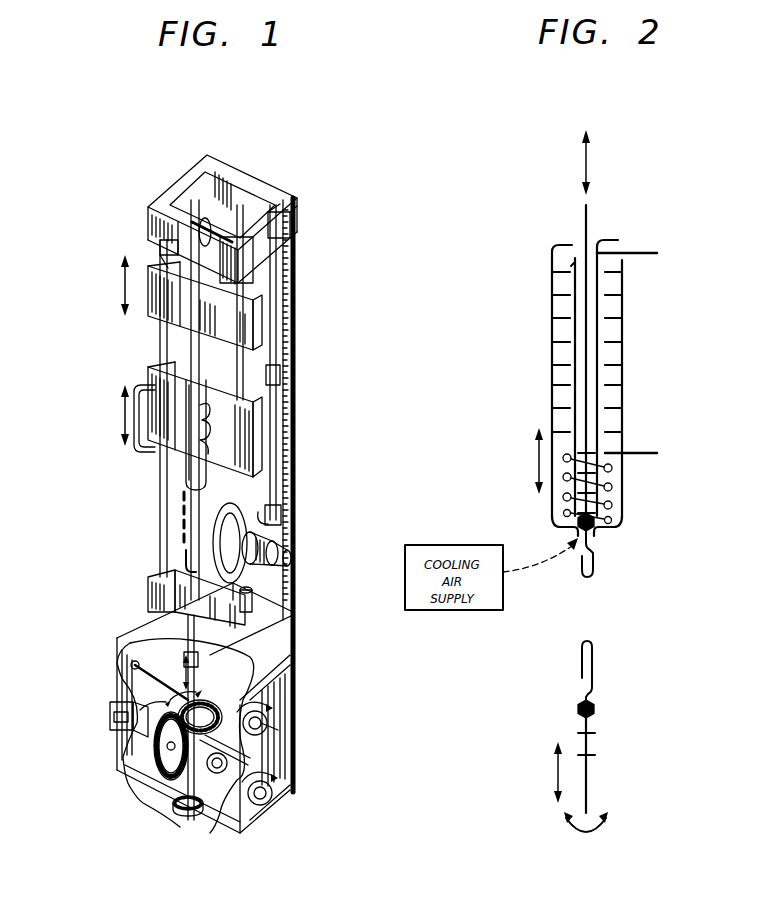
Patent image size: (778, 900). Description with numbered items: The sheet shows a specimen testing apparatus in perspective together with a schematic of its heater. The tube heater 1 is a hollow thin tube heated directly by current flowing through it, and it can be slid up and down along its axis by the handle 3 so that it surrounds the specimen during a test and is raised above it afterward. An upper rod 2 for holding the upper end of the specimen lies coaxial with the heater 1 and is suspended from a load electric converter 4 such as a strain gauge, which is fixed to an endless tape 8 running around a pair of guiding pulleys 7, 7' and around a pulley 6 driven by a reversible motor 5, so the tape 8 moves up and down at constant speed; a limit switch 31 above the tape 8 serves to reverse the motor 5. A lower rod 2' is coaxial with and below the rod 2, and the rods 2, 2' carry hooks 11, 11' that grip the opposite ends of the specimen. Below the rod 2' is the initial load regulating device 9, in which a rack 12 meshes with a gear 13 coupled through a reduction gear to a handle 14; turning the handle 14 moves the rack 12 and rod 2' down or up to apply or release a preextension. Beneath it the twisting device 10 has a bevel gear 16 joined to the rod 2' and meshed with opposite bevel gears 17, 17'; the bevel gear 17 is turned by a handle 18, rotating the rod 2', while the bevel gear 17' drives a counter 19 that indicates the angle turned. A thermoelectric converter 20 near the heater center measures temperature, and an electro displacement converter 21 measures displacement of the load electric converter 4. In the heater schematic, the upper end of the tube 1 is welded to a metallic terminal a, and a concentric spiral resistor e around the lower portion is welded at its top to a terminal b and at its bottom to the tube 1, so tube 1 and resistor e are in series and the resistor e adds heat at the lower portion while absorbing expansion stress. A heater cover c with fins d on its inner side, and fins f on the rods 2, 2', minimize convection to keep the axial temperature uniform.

In FIG. 1, the tube heater 1 is at (190, 452).
In FIG. 2, the tube heater 1 is at (598, 352).
In FIG. 1, the upper rod 2 is at (130, 400).
In FIG. 2, the upper rod 2 is at (614, 333).
In FIG. 1, the lower rod 2' is at (165, 599).
In FIG. 2, the lower rod 2' is at (614, 765).
In FIG. 1, the handle 3 is at (148, 437).
In FIG. 1, the load electric converter 4 is at (186, 306).
In FIG. 1, the reversible motor 5 is at (287, 553).
In FIG. 1, the pulley 6 is at (268, 515).
In FIG. 1, the guiding pulley 7 is at (222, 201).
In FIG. 1, the guiding pulley 7' is at (231, 619).
In FIG. 1, the endless tape 8 is at (190, 246).
In FIG. 1, the initial load regulating device 9 is at (270, 690).
In FIG. 1, the twisting device 10 is at (240, 828).
In FIG. 1, the hook 11 is at (136, 518).
In FIG. 2, the hook 11 is at (614, 545).
In FIG. 1, the hook 11' is at (143, 564).
In FIG. 2, the hook 11' is at (620, 671).
In FIG. 1, the rack 12 is at (130, 690).
In FIG. 1, the gear 13 is at (248, 740).
In FIG. 1, the handle 14 is at (265, 724).
In FIG. 1, the bevel gear 16 is at (178, 792).
In FIG. 1, the bevel gear 17 is at (201, 821).
In FIG. 1, the bevel gear 17' is at (127, 762).
In FIG. 1, the handle 18 is at (280, 808).
In FIG. 1, the counter 19 is at (110, 718).
In FIG. 1, the thermoelectric converter 20 is at (180, 410).
In FIG. 1, the electro displacement converter 21 is at (285, 566).
In FIG. 1, the limit switch 31 is at (275, 200).
In FIG. 2, the metallic terminal a is at (650, 253).
In FIG. 2, the terminal b is at (652, 453).
In FIG. 2, the heater cover c is at (625, 392).
In FIG. 2, the fins d is at (607, 320).
In FIG. 2, the spiral resistor e is at (612, 505).
In FIG. 2, the fins f is at (584, 406).